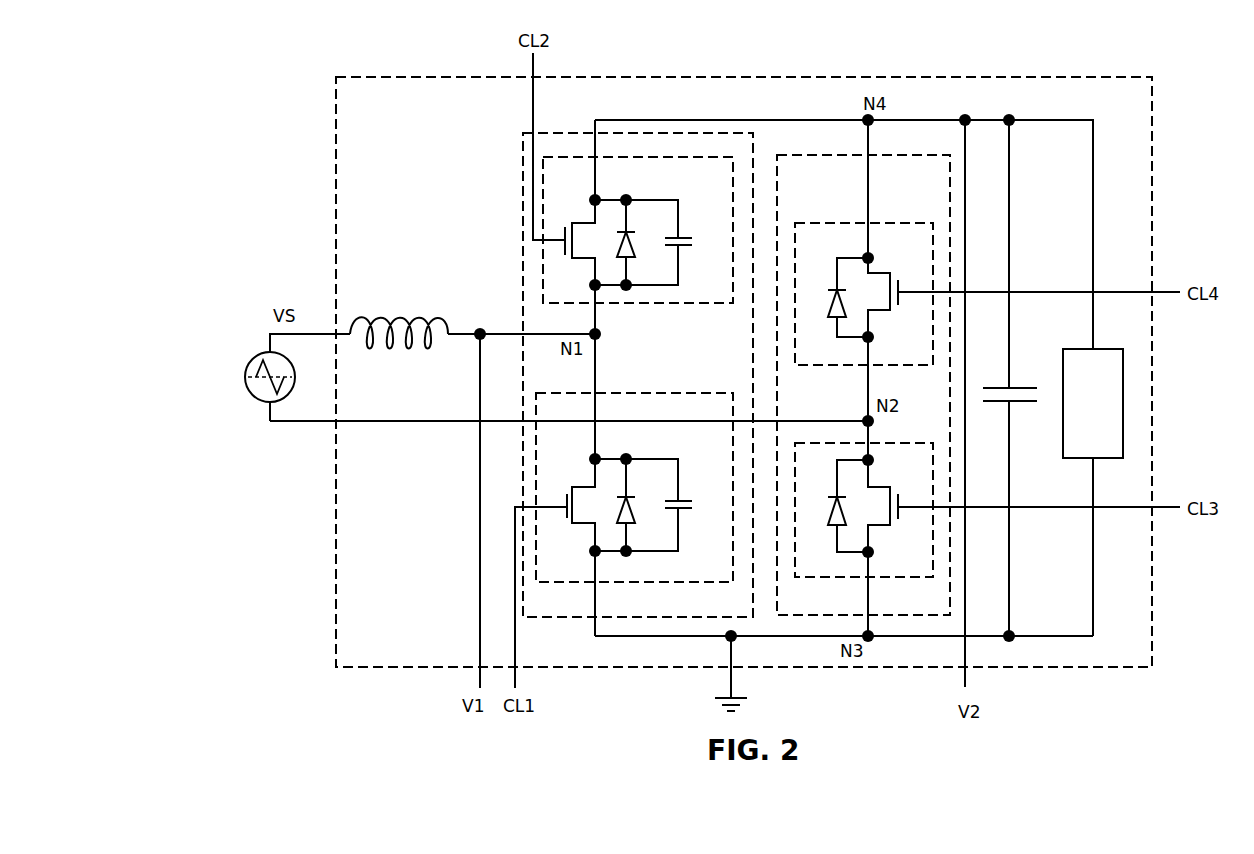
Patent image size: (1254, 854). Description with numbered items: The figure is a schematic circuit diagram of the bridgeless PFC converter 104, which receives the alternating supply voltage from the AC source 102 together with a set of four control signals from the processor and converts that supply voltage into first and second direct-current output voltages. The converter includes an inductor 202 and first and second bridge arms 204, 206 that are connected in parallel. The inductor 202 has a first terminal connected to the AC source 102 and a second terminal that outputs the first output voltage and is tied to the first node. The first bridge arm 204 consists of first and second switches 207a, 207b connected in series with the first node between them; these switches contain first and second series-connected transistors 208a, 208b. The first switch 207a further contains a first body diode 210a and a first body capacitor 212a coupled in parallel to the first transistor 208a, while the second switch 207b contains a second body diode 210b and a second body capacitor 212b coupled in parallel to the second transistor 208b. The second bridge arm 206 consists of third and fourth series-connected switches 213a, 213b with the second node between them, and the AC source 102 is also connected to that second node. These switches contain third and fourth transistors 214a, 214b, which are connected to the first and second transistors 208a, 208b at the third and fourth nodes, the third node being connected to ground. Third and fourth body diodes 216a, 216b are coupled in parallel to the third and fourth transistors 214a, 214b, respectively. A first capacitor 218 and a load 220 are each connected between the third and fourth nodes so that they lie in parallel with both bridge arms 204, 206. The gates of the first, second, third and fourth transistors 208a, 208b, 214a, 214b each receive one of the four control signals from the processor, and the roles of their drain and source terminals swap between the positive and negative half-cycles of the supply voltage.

The AC source 102 is at (246, 391).
The bridgeless PFC converter 104 is at (336, 150).
The inductor 202 is at (378, 318).
The first bridge arm 204 is at (523, 160).
The second bridge arm 206 is at (848, 155).
The first switch 207a is at (633, 582).
The second switch 207b is at (657, 304).
The first transistor 208a is at (572, 487).
The second transistor 208b is at (575, 222).
The first body diode 210a is at (634, 510).
The second body diode 210b is at (636, 248).
The first body capacitor 212a is at (690, 498).
The second body capacitor 212b is at (688, 238).
The third switch 213a is at (883, 580).
The fourth switch 213b is at (852, 223).
The third transistor 214a is at (883, 487).
The fourth transistor 214b is at (888, 273).
The third body diode 216a is at (833, 524).
The fourth body diode 216b is at (833, 318).
The first capacitor 218 is at (1020, 385).
The load 220 is at (1115, 348).